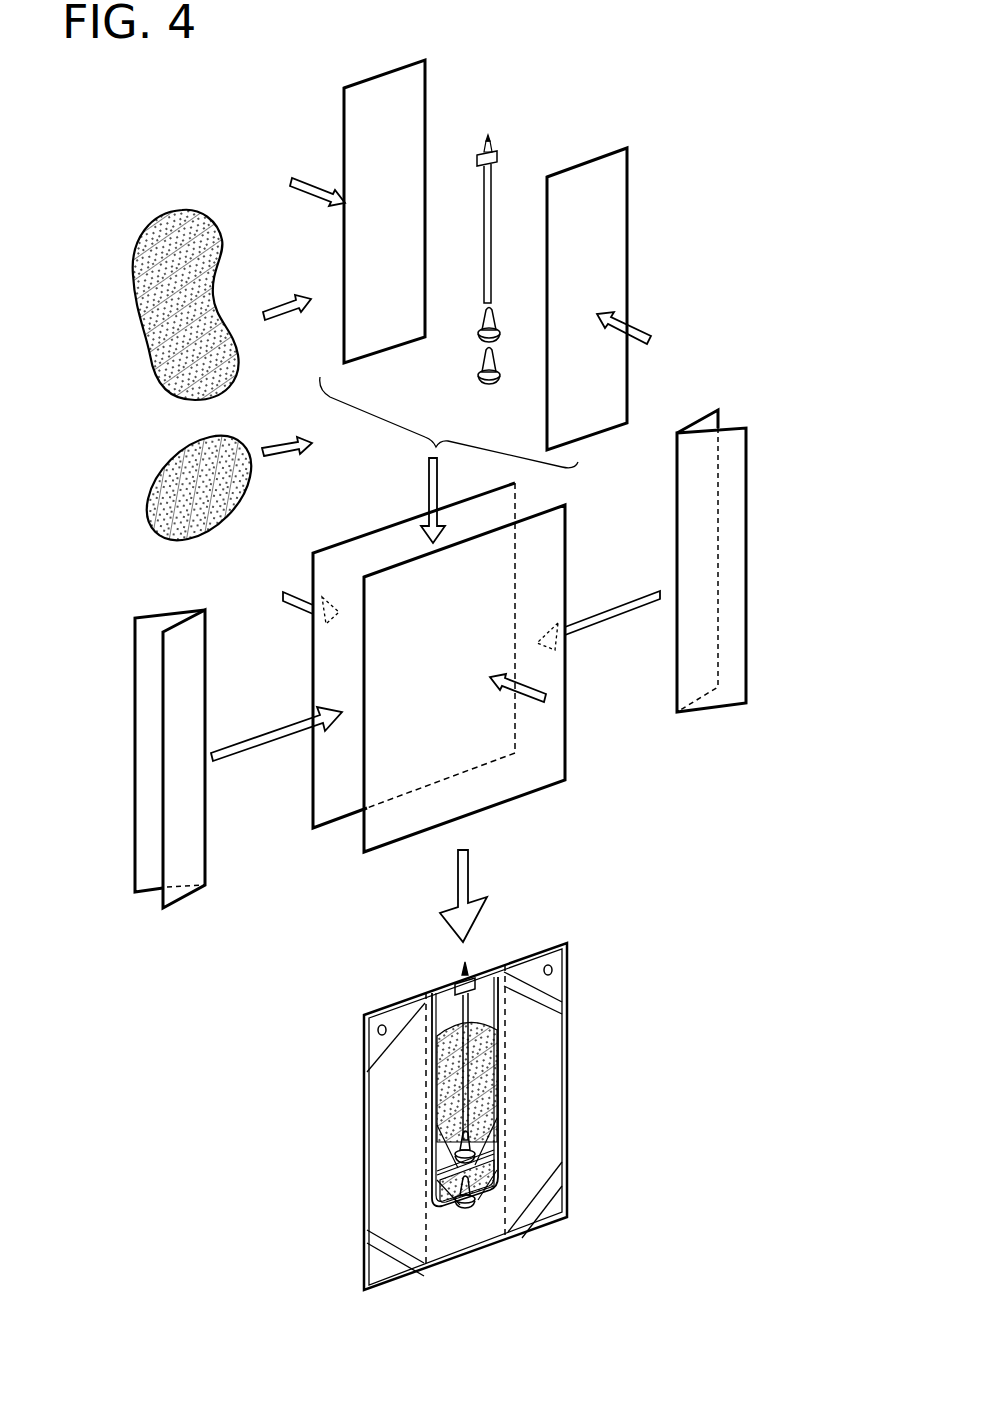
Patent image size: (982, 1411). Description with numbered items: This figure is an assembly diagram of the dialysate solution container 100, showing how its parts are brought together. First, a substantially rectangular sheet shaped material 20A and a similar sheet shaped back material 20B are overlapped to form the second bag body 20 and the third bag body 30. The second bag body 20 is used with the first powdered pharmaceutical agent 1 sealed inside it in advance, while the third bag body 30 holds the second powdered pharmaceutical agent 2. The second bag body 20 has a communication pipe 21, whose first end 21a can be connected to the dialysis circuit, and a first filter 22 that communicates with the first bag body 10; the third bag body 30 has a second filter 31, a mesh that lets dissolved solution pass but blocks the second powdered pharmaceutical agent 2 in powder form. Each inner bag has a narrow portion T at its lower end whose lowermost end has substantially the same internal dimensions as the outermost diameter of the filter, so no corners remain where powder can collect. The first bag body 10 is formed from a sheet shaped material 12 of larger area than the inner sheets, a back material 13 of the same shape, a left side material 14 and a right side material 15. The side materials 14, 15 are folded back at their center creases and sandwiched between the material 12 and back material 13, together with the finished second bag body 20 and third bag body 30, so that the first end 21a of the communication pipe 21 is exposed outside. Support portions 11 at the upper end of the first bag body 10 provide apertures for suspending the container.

The first powdered pharmaceutical agent 1 is at (165, 215).
The second powdered pharmaceutical agent 2 is at (147, 505).
The first bag body 10 is at (763, 554).
The support portion 11 is at (383, 1025).
The material 12 is at (545, 780).
The back material 13 is at (345, 548).
The left side material 14 is at (145, 620).
The right side material 15 is at (748, 484).
The second bag body 20 is at (690, 197).
The material 20A is at (620, 168).
The back material 20B is at (344, 107).
The communication pipe 21 is at (492, 190).
The first end 21a is at (490, 134).
The first filter 22 is at (500, 318).
The third bag body 30 is at (498, 1172).
The second filter 31 is at (500, 362).
The narrow portion T is at (452, 1142).
The dialysate solution container 100 is at (676, 1043).